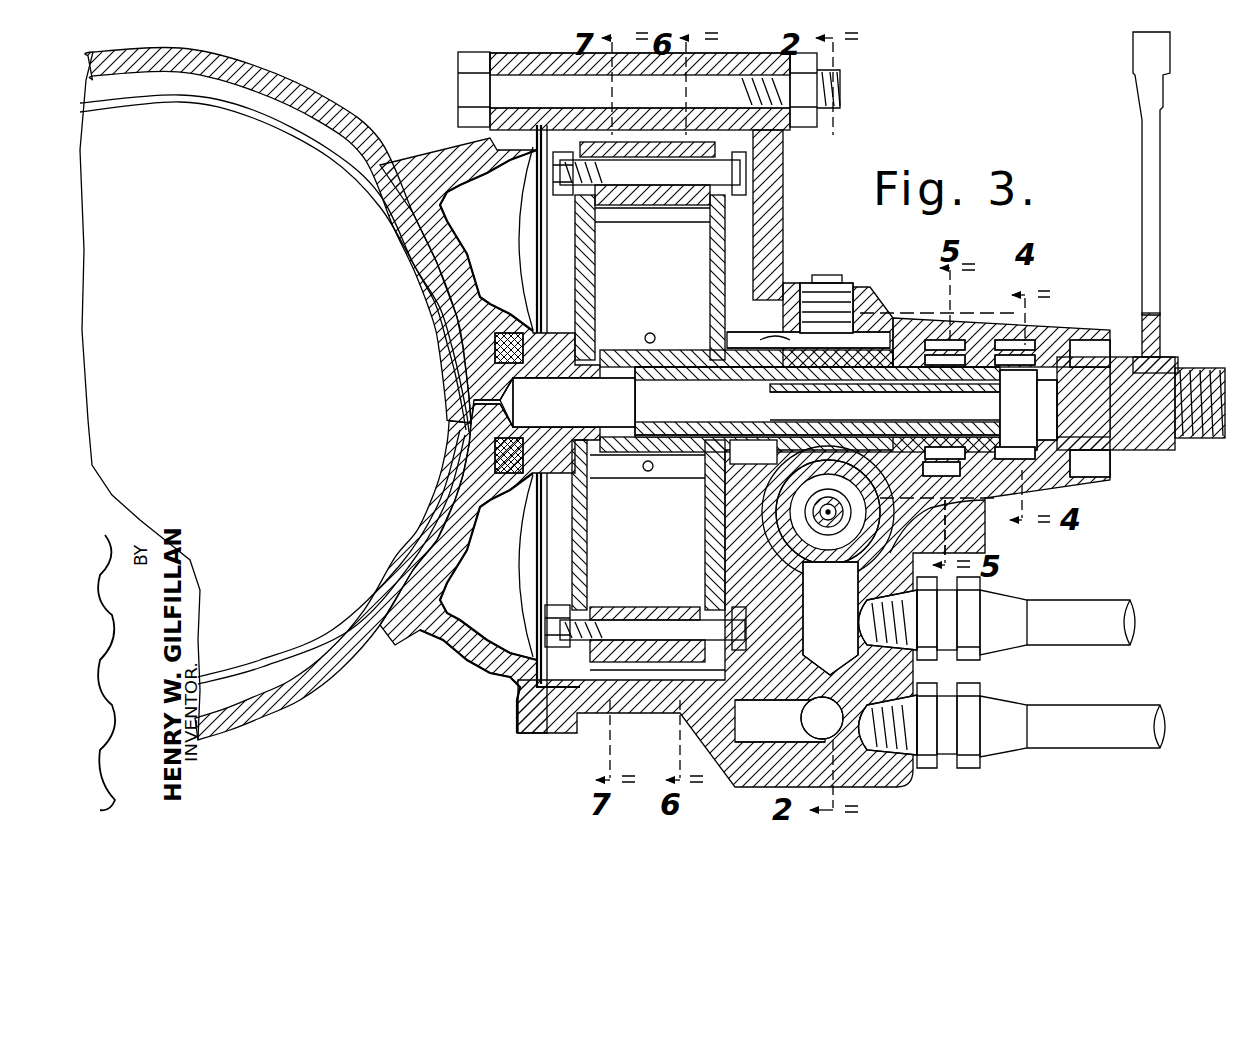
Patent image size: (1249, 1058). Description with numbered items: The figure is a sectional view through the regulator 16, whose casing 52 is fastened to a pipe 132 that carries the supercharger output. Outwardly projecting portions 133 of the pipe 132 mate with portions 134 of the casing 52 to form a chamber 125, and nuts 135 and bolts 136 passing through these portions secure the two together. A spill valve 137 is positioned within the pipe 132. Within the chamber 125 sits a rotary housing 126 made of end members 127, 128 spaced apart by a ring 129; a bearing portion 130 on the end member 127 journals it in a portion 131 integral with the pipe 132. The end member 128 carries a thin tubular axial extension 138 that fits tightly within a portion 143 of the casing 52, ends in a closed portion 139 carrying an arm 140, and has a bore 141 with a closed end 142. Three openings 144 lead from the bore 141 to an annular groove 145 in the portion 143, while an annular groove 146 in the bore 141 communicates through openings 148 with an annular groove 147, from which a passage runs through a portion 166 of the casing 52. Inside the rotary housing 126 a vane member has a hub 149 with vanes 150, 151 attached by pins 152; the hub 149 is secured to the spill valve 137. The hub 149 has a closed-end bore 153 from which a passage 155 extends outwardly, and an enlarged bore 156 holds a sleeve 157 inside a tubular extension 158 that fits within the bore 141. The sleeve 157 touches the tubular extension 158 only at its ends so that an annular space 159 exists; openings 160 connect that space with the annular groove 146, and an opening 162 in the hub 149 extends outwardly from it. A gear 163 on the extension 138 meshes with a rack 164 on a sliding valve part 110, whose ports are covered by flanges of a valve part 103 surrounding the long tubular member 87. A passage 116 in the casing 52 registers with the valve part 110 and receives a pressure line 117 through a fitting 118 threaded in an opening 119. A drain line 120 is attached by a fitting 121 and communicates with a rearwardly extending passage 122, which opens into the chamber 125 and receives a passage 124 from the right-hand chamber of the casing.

The regulator 16 is at (795, 168).
The casing 52 is at (778, 186).
The tubular member 87 is at (830, 547).
The valve part 103 is at (824, 548).
The valve part 110 is at (798, 395).
The passage 116 is at (818, 628).
The pressure line 117 is at (1052, 628).
The fitting 118 is at (930, 667).
The opening 119 is at (883, 610).
The drain line 120 is at (1040, 720).
The fitting 121 is at (932, 680).
The passage 122 is at (735, 710).
The passage 124 is at (820, 722).
The chamber 125 is at (745, 138).
The rotary housing 126 is at (556, 668).
The end member 127 is at (580, 525).
The end member 128 is at (722, 222).
The ring 129 is at (648, 617).
The bearing portion 130 is at (545, 498).
The portion 131 is at (478, 330).
The pipe 132 is at (240, 80).
The outwardly projecting portions 133 is at (468, 165).
The portions 134 is at (597, 68).
The nuts 135 is at (818, 118).
The bolts 136 is at (838, 88).
The spill valve 137 is at (390, 556).
The tubular axial extension 138 is at (1055, 358).
The closed portion 139 is at (1200, 392).
The arm 140 is at (1148, 147).
The bore 141 is at (1000, 425).
The closed end 142 is at (1045, 420).
The portion 143 is at (1005, 345).
The openings 144 is at (1028, 407).
The annular groove 145 is at (1032, 340).
The annular groove 146 is at (903, 345).
The annular groove 147 is at (963, 345).
The openings 148 is at (952, 345).
The hub 149 is at (607, 355).
The vane 150 is at (692, 238).
The vane 151 is at (600, 548).
The pins 152 is at (650, 332).
The bore 153 is at (500, 386).
The passage 155 is at (612, 430).
The enlarged bore 156 is at (757, 395).
The sleeve 157 is at (768, 380).
The tubular extension 158 is at (826, 375).
The annular space 159 is at (780, 388).
The openings 160 is at (942, 385).
The opening 162 is at (672, 352).
The gear 163 is at (793, 295).
The rack 164 is at (935, 398).
The portion 166 is at (965, 530).